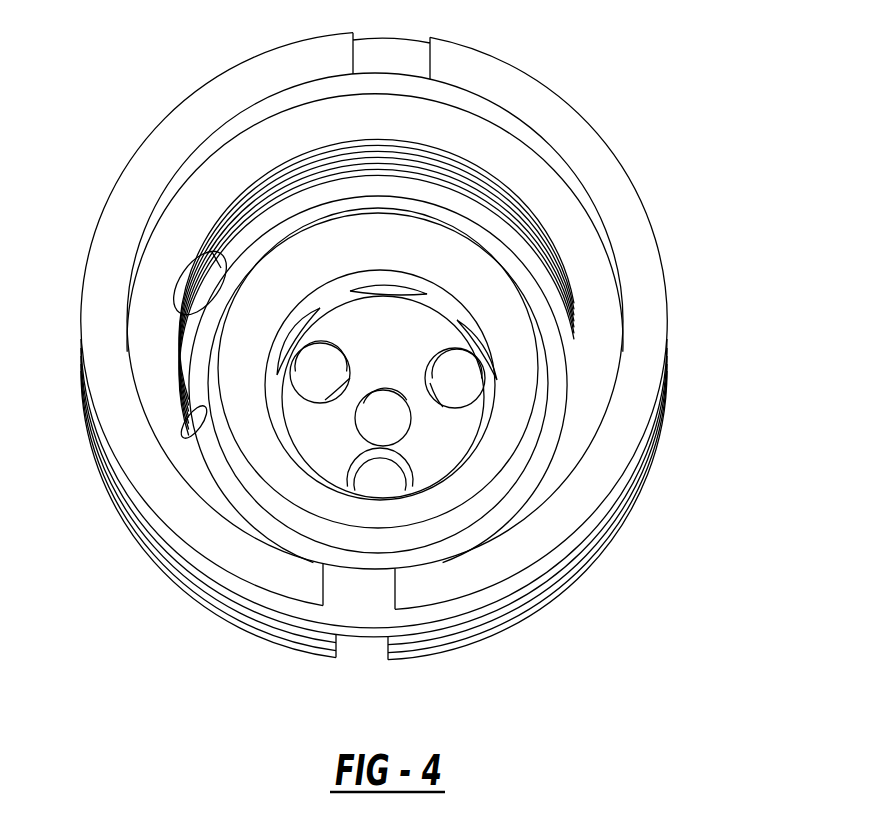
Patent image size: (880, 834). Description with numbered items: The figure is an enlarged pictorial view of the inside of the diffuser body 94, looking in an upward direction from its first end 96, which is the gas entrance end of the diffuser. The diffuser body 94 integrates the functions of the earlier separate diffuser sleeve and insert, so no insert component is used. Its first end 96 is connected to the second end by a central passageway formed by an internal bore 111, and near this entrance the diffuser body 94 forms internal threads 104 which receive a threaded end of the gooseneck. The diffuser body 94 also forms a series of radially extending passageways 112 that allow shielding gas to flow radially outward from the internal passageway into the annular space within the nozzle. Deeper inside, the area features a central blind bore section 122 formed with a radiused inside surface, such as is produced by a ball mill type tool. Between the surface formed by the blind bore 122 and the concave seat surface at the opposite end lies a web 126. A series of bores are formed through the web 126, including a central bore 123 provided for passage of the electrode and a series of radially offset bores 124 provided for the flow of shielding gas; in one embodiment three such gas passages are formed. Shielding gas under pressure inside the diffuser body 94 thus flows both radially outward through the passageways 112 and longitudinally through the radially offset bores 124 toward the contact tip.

The diffuser body 94 is at (643, 210).
The first end 96 is at (618, 527).
The internal threads 104 is at (174, 311).
The internal bore 111 is at (200, 430).
The radially extending passageways 112 is at (368, 284).
The central blind bore section 122 is at (450, 434).
The central bore 123 is at (381, 426).
The radially offset bores 124 is at (473, 388).
The web 126 is at (403, 343).